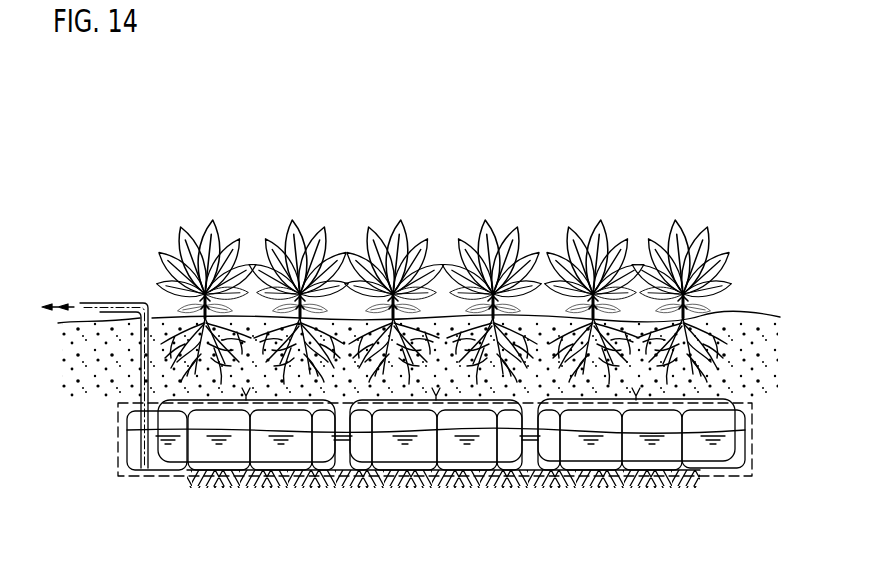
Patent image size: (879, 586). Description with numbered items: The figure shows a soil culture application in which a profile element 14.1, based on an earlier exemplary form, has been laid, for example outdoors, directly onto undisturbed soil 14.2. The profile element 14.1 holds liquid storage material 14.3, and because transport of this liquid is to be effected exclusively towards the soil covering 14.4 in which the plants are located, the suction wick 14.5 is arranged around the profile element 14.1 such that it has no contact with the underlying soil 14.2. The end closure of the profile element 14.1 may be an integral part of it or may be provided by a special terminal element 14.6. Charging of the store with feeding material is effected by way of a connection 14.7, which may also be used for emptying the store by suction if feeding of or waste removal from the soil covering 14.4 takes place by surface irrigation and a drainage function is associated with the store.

The profile element 14.1 is at (662, 482).
The undisturbed soil 14.2 is at (362, 487).
The liquid storage material 14.3 is at (207, 445).
The soil covering 14.4 is at (443, 352).
The suction wick 14.5 is at (507, 460).
The terminal element 14.6 is at (122, 460).
The connection 14.7 is at (128, 305).